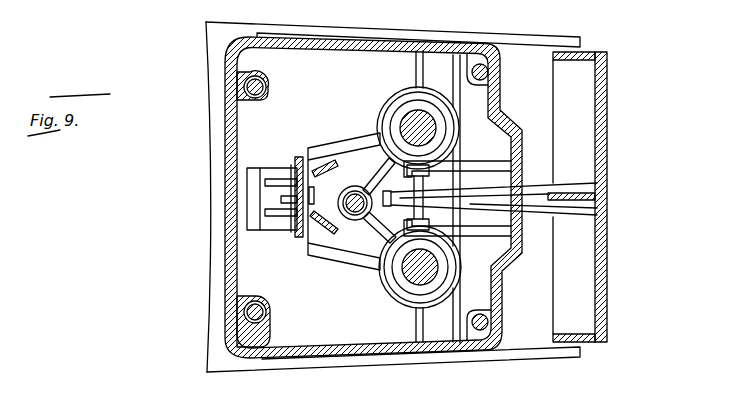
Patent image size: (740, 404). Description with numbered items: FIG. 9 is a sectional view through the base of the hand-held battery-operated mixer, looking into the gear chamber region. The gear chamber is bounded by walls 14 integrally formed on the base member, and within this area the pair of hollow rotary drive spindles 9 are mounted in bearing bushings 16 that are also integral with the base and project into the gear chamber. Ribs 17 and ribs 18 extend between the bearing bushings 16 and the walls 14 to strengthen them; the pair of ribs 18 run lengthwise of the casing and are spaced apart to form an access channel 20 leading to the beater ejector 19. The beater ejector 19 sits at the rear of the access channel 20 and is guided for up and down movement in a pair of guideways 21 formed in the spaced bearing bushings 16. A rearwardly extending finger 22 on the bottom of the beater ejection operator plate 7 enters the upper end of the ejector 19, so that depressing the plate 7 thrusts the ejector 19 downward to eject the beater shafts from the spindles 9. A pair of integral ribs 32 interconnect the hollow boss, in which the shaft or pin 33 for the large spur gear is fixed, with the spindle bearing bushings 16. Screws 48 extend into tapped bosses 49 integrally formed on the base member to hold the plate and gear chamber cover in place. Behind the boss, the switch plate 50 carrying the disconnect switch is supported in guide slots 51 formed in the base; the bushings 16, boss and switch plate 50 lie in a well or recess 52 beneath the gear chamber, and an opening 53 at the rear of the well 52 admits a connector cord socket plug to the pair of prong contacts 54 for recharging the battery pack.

The beater ejection operator plate 7 is at (614, 117).
The rotary drive spindles 9 is at (407, 115).
The walls 14 is at (360, 352).
The bearing bushings 16 is at (392, 103).
The ribs 17 is at (413, 56).
The ribs 18 is at (477, 163).
The beater ejector 19 is at (440, 198).
The access channel 20 is at (488, 218).
The guideways 21 is at (374, 224).
The finger 22 is at (516, 193).
The ribs 32 is at (378, 168).
The shaft or pin 33 is at (352, 190).
The screws 48 is at (238, 102).
The tapped bosses 49 is at (263, 83).
The switch plate 50 is at (289, 230).
The guide slots 51 is at (296, 162).
The well or recess 52 is at (338, 155).
The opening 53 is at (265, 179).
The prong contacts 54 is at (265, 208).